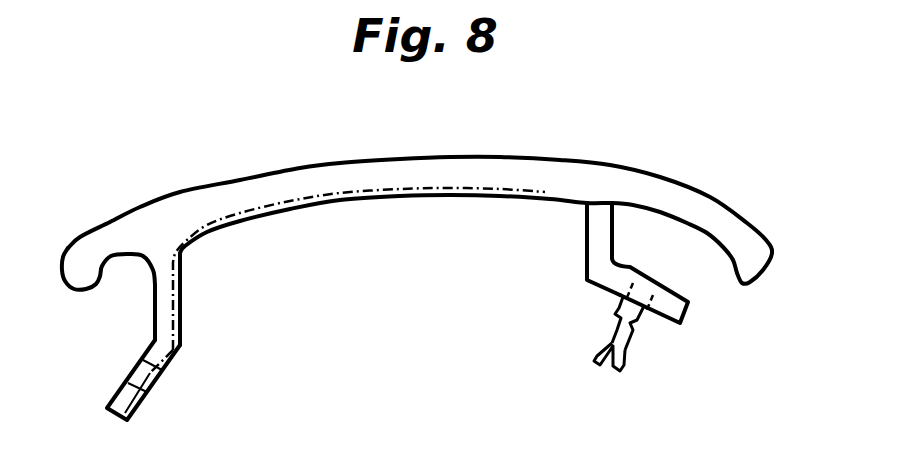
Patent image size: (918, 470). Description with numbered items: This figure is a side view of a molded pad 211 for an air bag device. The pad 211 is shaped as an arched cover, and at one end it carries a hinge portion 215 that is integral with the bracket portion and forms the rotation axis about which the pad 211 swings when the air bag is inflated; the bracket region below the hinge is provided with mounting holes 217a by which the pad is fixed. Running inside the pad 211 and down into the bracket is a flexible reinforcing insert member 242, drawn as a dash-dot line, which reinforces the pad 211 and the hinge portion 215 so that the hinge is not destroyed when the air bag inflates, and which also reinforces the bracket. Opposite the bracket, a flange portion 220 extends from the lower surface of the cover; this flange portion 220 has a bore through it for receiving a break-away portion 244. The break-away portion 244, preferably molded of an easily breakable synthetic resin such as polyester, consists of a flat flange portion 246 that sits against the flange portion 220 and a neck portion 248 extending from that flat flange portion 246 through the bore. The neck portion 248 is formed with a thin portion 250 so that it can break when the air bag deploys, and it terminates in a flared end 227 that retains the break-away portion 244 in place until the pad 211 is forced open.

The pad 211 is at (506, 161).
The hinge portion 215 is at (152, 322).
The mounting holes 217a is at (160, 382).
The flange portion 220 is at (593, 286).
The flexible reinforcing insert member 242 is at (252, 215).
The break-away portion 244 is at (618, 371).
The flat flange portion 246 is at (682, 294).
The neck portion 248 is at (644, 313).
The thin portion 250 is at (632, 330).
The flared end 227 is at (613, 372).